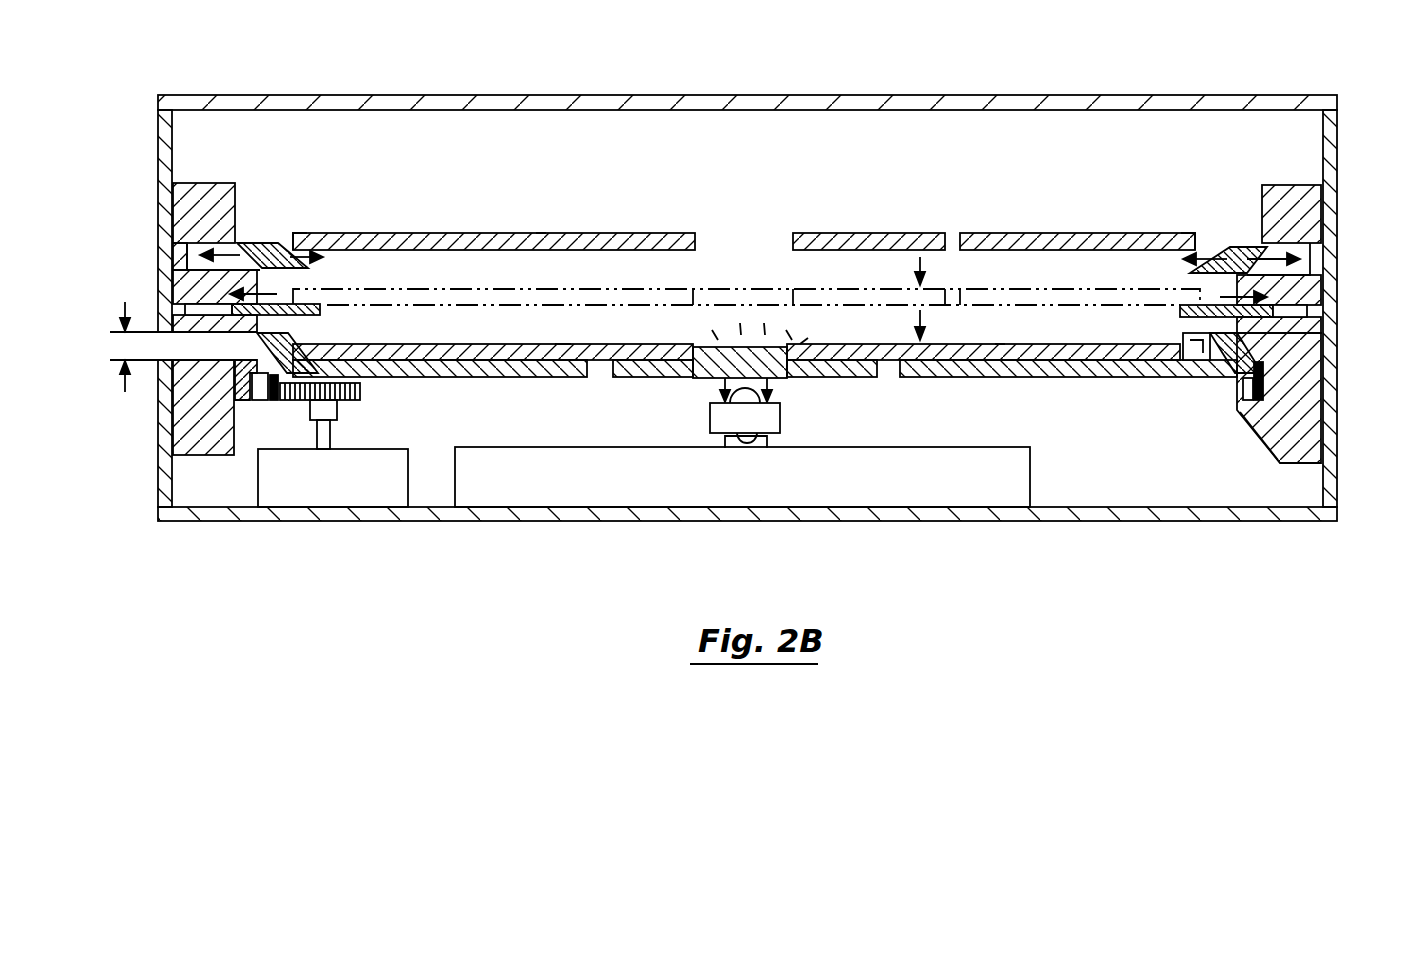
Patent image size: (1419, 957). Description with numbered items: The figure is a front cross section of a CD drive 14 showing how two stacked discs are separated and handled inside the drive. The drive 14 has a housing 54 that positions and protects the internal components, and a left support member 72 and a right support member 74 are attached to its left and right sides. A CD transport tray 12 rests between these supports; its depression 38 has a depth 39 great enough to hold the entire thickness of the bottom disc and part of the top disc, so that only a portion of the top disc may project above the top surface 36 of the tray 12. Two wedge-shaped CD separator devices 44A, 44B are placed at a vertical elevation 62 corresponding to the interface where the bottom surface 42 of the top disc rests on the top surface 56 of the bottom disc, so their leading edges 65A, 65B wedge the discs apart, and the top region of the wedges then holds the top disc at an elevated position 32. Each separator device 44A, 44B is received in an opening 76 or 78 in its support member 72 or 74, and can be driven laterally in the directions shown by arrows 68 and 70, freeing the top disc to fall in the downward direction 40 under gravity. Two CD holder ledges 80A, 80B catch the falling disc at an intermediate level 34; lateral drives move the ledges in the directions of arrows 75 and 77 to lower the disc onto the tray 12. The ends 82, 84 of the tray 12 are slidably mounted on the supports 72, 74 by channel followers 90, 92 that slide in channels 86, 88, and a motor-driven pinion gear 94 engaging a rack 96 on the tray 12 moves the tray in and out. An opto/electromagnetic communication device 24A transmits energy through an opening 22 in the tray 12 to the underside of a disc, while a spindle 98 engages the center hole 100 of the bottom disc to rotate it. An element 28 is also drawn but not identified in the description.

The CD drive 14 is at (838, 68).
The housing 54 is at (158, 133).
The left support member 72 is at (198, 197).
The right support member 74 is at (1290, 195).
The opening 76 is at (195, 248).
The direction arrow 75 is at (243, 280).
The directional arrow 68 is at (237, 243).
The leading edge 65A is at (308, 257).
The leading edge 65B is at (1207, 247).
The elevated level or position 32 is at (277, 250).
The CD separator device 44A is at (293, 266).
The CD separator device 44B is at (1227, 267).
The vertical elevation 62 is at (348, 251).
The bottom surface of CD(T) 42 is at (577, 252).
The intermediate level or position 34 is at (357, 305).
The CD holder ledge 80A is at (243, 307).
The CD holder ledge 80B is at (1262, 318).
The depth of depression 39 is at (127, 343).
The top surface of CD(B) 56 is at (531, 341).
The media 28 is at (563, 338).
The CD transport tray 12 is at (483, 380).
The opening 22 is at (600, 378).
The center hole 100 is at (703, 342).
The spindle 98 is at (663, 380).
The opto/electromagnetic communication device 24A is at (767, 418).
The downward direction 40 is at (925, 257).
The depression 38 is at (288, 333).
The end of tray 82 is at (235, 380).
The channel 86 is at (265, 395).
The rack 96 is at (270, 393).
The pinion gear 94 is at (360, 393).
The channel follower 90 is at (267, 395).
The directional arrow 70 is at (1257, 260).
The opening 78 is at (1300, 250).
The direction arrow 77 is at (1260, 290).
The top surface of tray 36 is at (1207, 325).
The end of tray 84 is at (1264, 366).
The channel 88 is at (1254, 395).
The channel follower 92 is at (1280, 430).